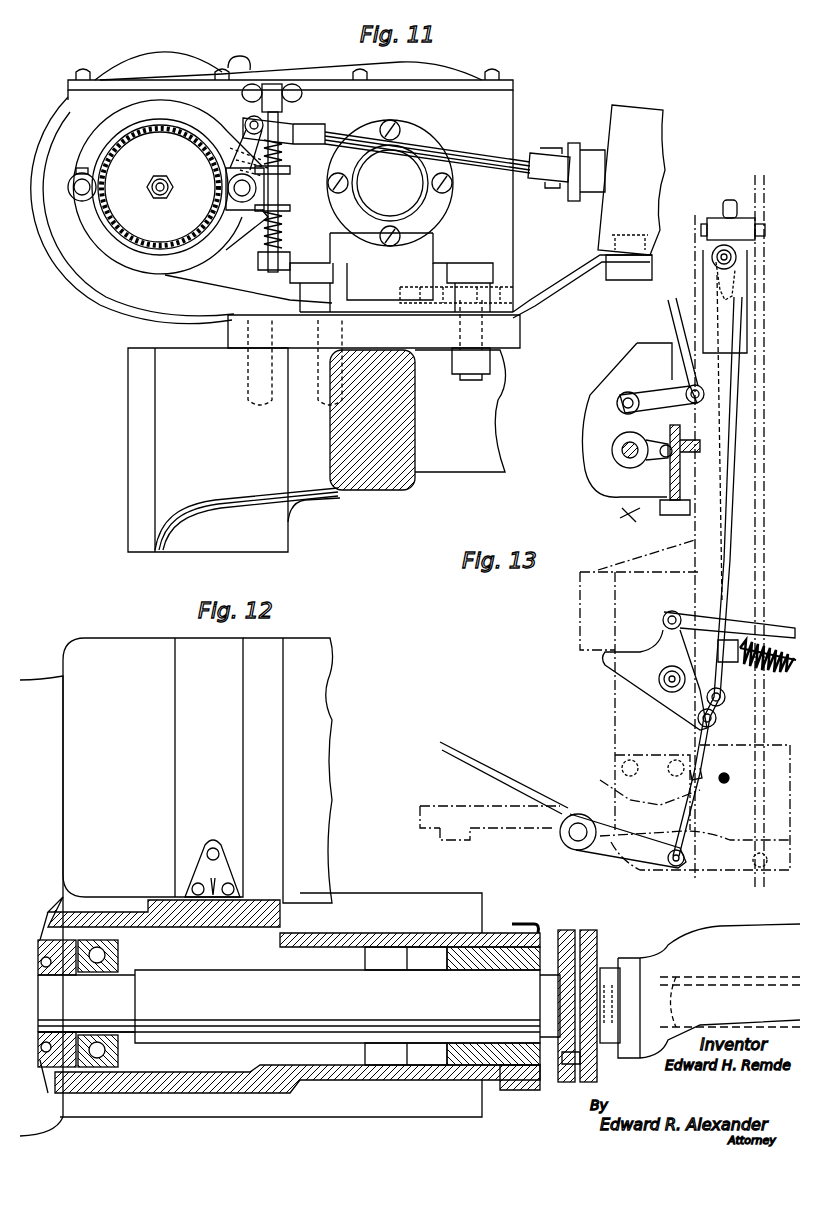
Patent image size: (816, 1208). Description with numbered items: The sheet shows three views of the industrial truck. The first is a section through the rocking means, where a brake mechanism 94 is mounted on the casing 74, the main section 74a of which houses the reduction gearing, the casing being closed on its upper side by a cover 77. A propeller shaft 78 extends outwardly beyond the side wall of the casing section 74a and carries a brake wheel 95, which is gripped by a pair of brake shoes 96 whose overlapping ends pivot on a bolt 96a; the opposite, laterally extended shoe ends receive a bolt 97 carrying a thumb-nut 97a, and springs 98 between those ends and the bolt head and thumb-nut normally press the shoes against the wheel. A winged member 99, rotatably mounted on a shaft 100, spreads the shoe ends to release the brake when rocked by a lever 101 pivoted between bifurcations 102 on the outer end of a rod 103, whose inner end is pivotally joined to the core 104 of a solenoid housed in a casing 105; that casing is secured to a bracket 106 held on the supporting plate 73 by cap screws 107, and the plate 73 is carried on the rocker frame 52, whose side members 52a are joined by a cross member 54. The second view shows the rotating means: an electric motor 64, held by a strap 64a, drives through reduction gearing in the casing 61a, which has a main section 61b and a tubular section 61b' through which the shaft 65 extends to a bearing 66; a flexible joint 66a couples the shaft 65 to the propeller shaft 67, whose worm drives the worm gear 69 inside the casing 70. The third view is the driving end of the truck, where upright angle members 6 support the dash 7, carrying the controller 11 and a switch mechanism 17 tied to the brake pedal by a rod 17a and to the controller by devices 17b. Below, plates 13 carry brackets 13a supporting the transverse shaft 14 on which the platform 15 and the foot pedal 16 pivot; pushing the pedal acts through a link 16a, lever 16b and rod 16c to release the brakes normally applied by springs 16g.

In FIG. 11, the cover 77 is at (326, 78).
In FIG. 11, the casing 74 is at (513, 138).
In FIG. 11, the main section of casing 74a is at (108, 272).
In FIG. 11, the brake mechanism 94 is at (181, 210).
In FIG. 11, the brake shoes 96 is at (168, 118).
In FIG. 11, the bolt 96a is at (70, 192).
In FIG. 11, the brake wheel 95 is at (160, 187).
In FIG. 11, the propeller shaft 78 is at (160, 176).
In FIG. 11, the shaft 100 is at (232, 194).
In FIG. 11, the winged member 99 is at (232, 184).
In FIG. 11, the lever 101 is at (252, 140).
In FIG. 11, the bolt 97 is at (282, 192).
In FIG. 11, the thumb-nut 97a is at (285, 98).
In FIG. 11, the springs 98 is at (284, 164).
In FIG. 11, the bifurcations 102 is at (300, 126).
In FIG. 11, the rod 103 is at (450, 150).
In FIG. 11, the solenoid core 104 is at (588, 148).
In FIG. 11, the solenoid casing 105 is at (642, 178).
In FIG. 11, the bracket 106 is at (560, 284).
In FIG. 11, the cap screws 107 is at (514, 284).
In FIG. 11, the supporting plate 73 is at (518, 332).
In FIG. 11, the frame or rocker 52 is at (216, 450).
In FIG. 11, the side members 52a is at (416, 450).
In FIG. 11, the cross member 54 is at (498, 446).
In FIG. 13, the dash 7 is at (758, 496).
In FIG. 13, the angle members 6 is at (692, 526).
In FIG. 13, the switch mechanism 17 is at (703, 254).
In FIG. 13, the rod 17a is at (735, 545).
In FIG. 13, the connecting devices 17b is at (698, 437).
In FIG. 13, the controller 11 is at (592, 478).
In FIG. 13, the plates 13 is at (612, 718).
In FIG. 13, the brackets 13a is at (610, 772).
In FIG. 13, the transverse rod or shaft 14 is at (578, 814).
In FIG. 13, the platform 15 is at (440, 812).
In FIG. 13, the foot pedal 16 is at (476, 758).
In FIG. 13, the link 16a is at (700, 770).
In FIG. 13, the lever 16b is at (680, 700).
In FIG. 13, the rod 16c is at (778, 628).
In FIG. 13, the springs 16g is at (757, 664).
In FIG. 12, the electric motor 64 is at (322, 736).
In FIG. 12, the strap 64a is at (178, 644).
In FIG. 12, the main section of casing 61b is at (280, 886).
In FIG. 12, the tubular section of casing 61b' is at (317, 1094).
In FIG. 12, the casing 61a is at (48, 1126).
In FIG. 12, the shaft 65 is at (190, 978).
In FIG. 12, the bearing 66 is at (478, 934).
In FIG. 12, the flexible joint 66a is at (572, 1082).
In FIG. 12, the propeller shaft 67 is at (612, 992).
In FIG. 12, the worm gear 69 is at (730, 990).
In FIG. 12, the casing 70 is at (660, 960).